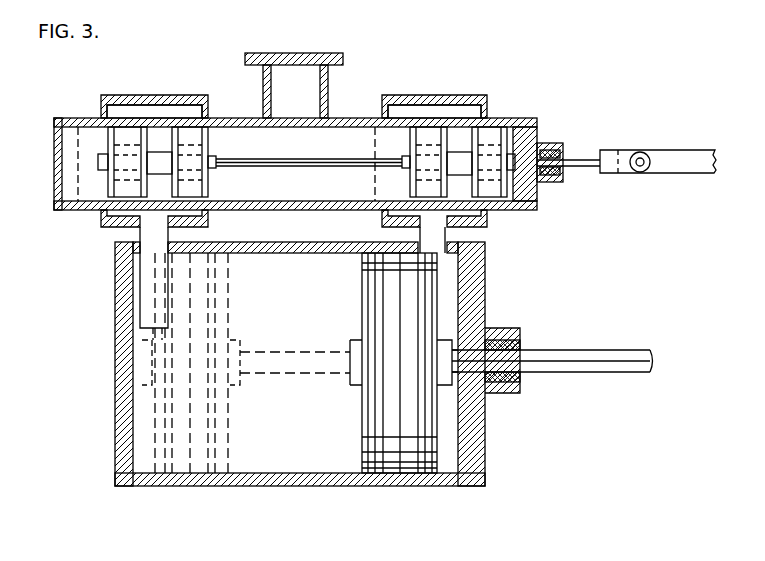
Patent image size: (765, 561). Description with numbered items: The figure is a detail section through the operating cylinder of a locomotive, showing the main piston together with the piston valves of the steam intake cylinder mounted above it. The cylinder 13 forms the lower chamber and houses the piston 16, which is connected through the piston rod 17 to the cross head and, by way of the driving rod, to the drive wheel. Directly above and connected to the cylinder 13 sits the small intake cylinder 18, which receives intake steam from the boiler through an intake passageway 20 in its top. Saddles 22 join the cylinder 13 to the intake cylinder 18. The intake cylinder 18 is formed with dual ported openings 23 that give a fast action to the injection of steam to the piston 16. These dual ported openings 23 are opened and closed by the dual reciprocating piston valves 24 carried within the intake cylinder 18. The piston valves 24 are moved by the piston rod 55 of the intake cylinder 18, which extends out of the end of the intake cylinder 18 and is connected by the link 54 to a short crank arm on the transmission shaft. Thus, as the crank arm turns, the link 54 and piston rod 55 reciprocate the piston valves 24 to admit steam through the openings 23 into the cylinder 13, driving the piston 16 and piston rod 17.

The cylinder 13 is at (270, 484).
The piston 16 is at (196, 470).
The piston rod 17 is at (607, 364).
The intake cylinder 18 is at (86, 194).
The intake passageway 20 is at (298, 60).
The saddles 22 is at (116, 96).
The dual ported openings 23 is at (187, 121).
The dual reciprocating piston valves 24 is at (123, 146).
The links 54 is at (660, 152).
The piston rods 55 is at (577, 164).